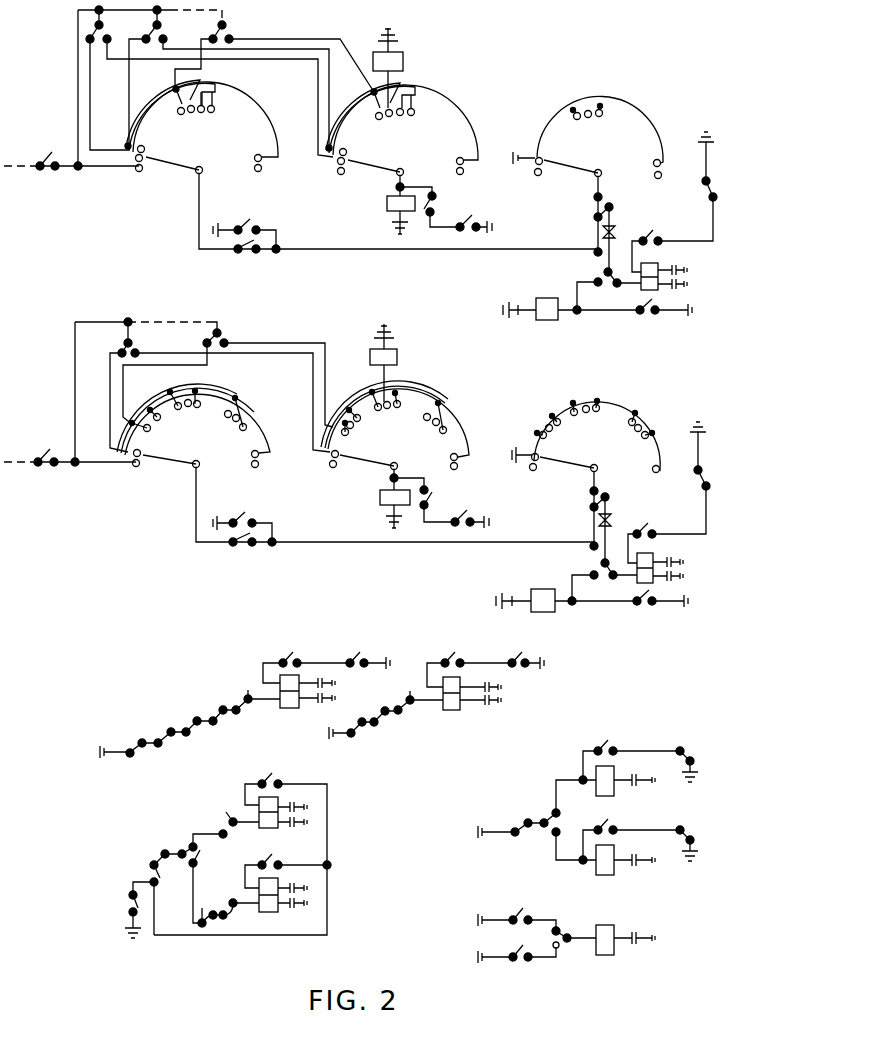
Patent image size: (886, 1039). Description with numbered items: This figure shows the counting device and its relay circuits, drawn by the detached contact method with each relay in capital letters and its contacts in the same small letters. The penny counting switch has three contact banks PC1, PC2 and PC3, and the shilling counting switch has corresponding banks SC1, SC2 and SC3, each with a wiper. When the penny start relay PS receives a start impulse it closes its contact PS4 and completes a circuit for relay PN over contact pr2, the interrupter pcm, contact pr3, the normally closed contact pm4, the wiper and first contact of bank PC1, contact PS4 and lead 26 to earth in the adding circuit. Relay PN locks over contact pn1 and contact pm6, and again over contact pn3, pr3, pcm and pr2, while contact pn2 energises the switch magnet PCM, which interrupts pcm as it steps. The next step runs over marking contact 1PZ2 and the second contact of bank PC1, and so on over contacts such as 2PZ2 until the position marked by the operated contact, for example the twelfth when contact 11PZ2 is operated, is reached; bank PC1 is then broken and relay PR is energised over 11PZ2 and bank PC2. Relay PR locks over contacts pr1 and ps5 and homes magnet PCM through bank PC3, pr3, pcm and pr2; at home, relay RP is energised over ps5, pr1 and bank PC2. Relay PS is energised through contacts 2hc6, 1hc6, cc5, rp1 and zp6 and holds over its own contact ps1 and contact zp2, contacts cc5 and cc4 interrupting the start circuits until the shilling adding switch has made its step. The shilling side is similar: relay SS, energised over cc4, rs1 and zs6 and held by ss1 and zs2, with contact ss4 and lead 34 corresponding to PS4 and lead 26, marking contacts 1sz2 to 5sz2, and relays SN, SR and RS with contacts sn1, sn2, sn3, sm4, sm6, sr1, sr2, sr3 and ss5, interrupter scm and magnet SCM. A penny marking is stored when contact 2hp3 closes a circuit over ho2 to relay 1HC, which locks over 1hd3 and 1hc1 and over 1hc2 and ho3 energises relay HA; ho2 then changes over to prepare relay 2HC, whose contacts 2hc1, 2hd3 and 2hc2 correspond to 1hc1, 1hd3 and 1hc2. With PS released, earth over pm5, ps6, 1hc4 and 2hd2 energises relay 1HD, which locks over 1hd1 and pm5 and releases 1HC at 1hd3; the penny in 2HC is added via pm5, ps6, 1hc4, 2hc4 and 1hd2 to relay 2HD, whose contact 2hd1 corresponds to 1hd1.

The lead 26 is at (35, 163).
The conductor from preceding circuit 34 is at (41, 460).
The contact of penny start relay PS4 is at (84, 167).
The switch contact ss4 is at (83, 464).
The contact of relay 1PZ 1PZ2 is at (209, 81).
The contact of relay 2PZ 2PZ2 is at (228, 78).
The contact of relay 11PZ 11PZ2 is at (275, 54).
The contact of relay 1SZ 1sz2 is at (220, 385).
The contact of relay 5SZ 5sz2 is at (228, 374).
The first contact bank of penny counting switch PC1 is at (202, 127).
The second contact bank of penny counting switch PC2 is at (402, 130).
The third contact bank of penny counting switch PC3 is at (588, 138).
The rotary step switch SC1 is at (193, 426).
The rotary step switch SC2 is at (395, 427).
The rotary step switch SC3 is at (586, 437).
The relay RP is at (398, 68).
The relay RS is at (395, 363).
The relay PR is at (386, 205).
The relay SR is at (383, 499).
The contact of relay PR pr1 is at (430, 207).
The contact of relay PS ps5 is at (473, 229).
The contact of relay PN pn3 is at (246, 230).
The normally closed contact of relay PM pm4 is at (247, 252).
The contact of relay PR pr3 is at (593, 216).
The interrupter of switch magnet PCM pcm is at (620, 239).
The contact of relay PR pr2 is at (607, 291).
The switch magnet PCM is at (571, 319).
The contact of relay PN pn2 is at (664, 312).
The relay PN is at (663, 268).
The contact of relay PN pn1 is at (672, 234).
The contact of relay PM pm6 is at (720, 166).
The relay contact sr1 is at (424, 500).
The switch contact ss5 is at (470, 515).
The relay contact sn3 is at (244, 524).
The relay contact sm4 is at (242, 546).
The relay contact sr3 is at (589, 511).
The rectifier scm is at (615, 530).
The relay contact sr2 is at (602, 582).
The relay SCM is at (566, 610).
The relay contact sn2 is at (660, 603).
The relay SN is at (659, 575).
The relay contact sn1 is at (667, 524).
The relay contact sm6 is at (711, 456).
The contact of relay 2HC 2hc6 is at (129, 746).
The contact of relay 1HC 1hc6 is at (161, 735).
The contact of relay CC cc5 is at (190, 724).
The relay contact rp1 is at (217, 713).
The contact of relay ZP zp6 is at (256, 702).
The penny start relay PS is at (307, 701).
The contact of relay PS ps1 is at (306, 662).
The contact of relay ZP zp2 is at (368, 655).
The contact of relay CC cc4 is at (351, 725).
The relay contact rs1 is at (384, 713).
The contact of relay ZS zs6 is at (418, 707).
The shilling start relay SS is at (472, 703).
The contact of relay SS ss1 is at (469, 664).
The contact of relay ZS zs2 is at (526, 655).
The relay 1HD is at (282, 821).
The contact of relay 1HD 1hd1 is at (242, 848).
The contact of relay 2HD 2hd2 is at (226, 829).
The contact of relay 1HC 1hc4 is at (189, 883).
The contact of relay PS ps6 is at (146, 892).
The normally operated contact of relay PM pm5 is at (121, 914).
The contact of relay 2HC 2hc4 is at (214, 921).
The contact of relay 1HD 1hd2 is at (234, 903).
The relay 2HD is at (281, 903).
The relay contact 2hd1 is at (286, 866).
The contact of relay 2HP 2hp3 is at (517, 822).
The contact of relay HO ho2 is at (574, 820).
The relay 1HC is at (625, 790).
The contact of relay 1HC 1hc1 is at (631, 753).
The contact of relay 1HD 1hd3 is at (695, 760).
The relay 2HC is at (624, 869).
The relay contact 2hc1 is at (631, 838).
The relay contact 2hd3 is at (695, 840).
The contact of relay 1HC 1hc2 is at (517, 914).
The relay contact 2hc2 is at (517, 950).
The contact of relay HO ho3 is at (574, 934).
The relay HA is at (625, 949).